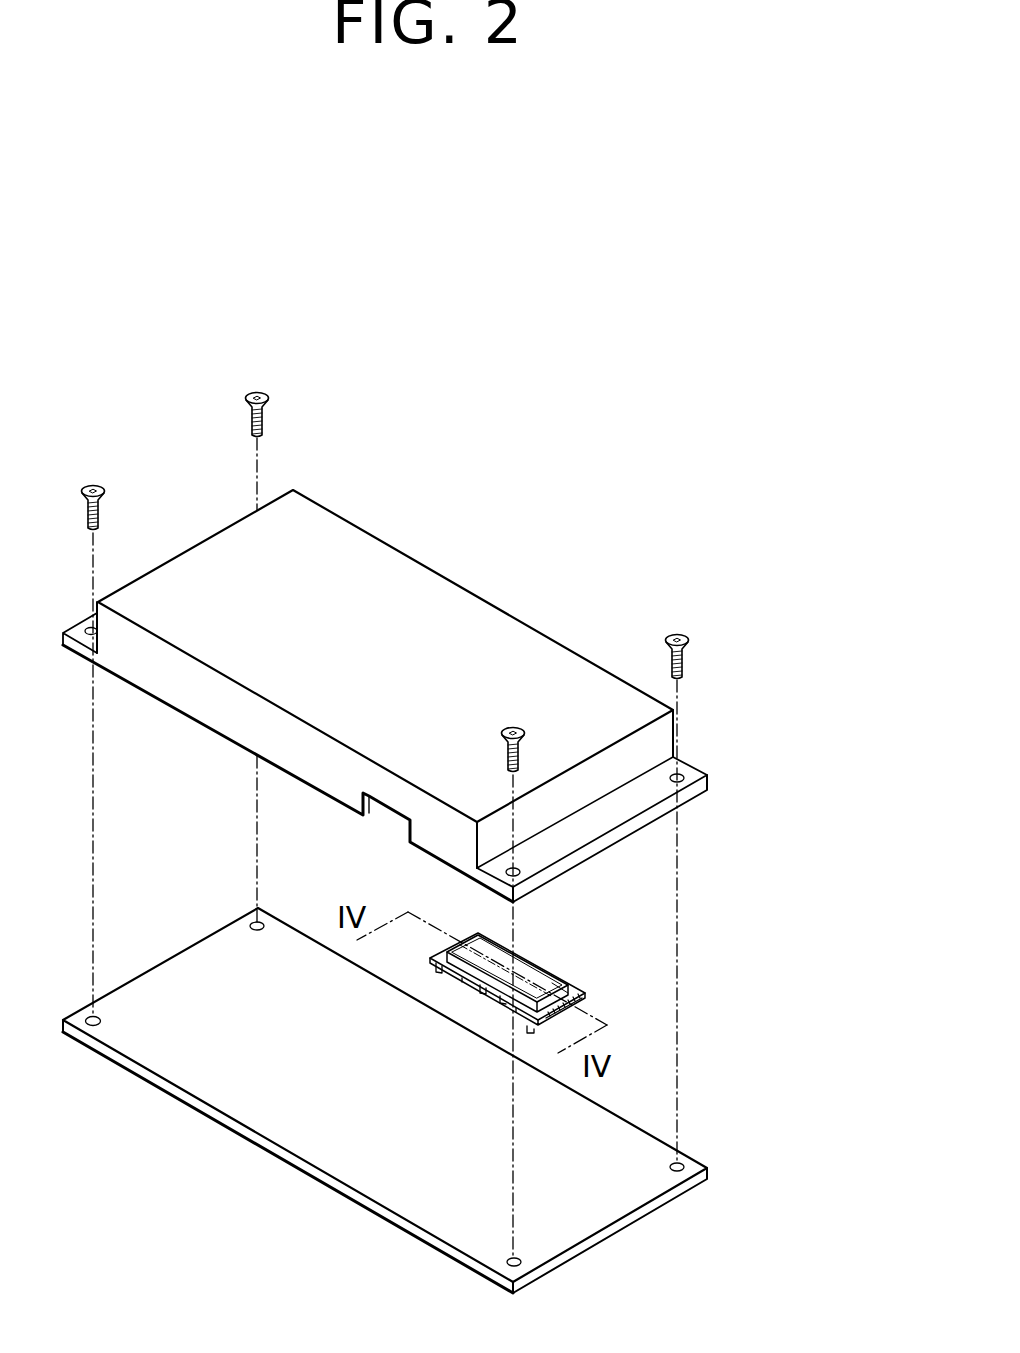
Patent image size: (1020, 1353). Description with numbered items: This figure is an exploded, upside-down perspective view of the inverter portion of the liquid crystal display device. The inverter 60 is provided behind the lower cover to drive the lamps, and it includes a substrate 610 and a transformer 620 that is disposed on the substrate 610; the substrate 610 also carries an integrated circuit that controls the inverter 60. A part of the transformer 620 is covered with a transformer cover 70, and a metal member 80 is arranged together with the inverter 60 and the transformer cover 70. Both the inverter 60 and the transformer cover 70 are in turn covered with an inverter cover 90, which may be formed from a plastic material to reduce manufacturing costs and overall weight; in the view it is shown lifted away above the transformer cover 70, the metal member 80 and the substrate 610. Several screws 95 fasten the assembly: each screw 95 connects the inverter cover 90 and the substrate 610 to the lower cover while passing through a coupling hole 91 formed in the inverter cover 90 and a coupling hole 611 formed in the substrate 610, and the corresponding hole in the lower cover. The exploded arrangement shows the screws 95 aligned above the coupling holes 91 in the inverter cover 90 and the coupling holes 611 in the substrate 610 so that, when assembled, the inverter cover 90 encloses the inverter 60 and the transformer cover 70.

The inverter 60 is at (473, 1100).
The transformer cover 70 is at (572, 985).
The metal member 80 is at (560, 974).
The inverter cover 90 is at (435, 697).
The coupling hole 91 is at (684, 781).
The screw 95 is at (687, 657).
The substrate 610 is at (708, 1173).
The coupling hole 611 is at (677, 1197).
The transformer 620 is at (580, 999).